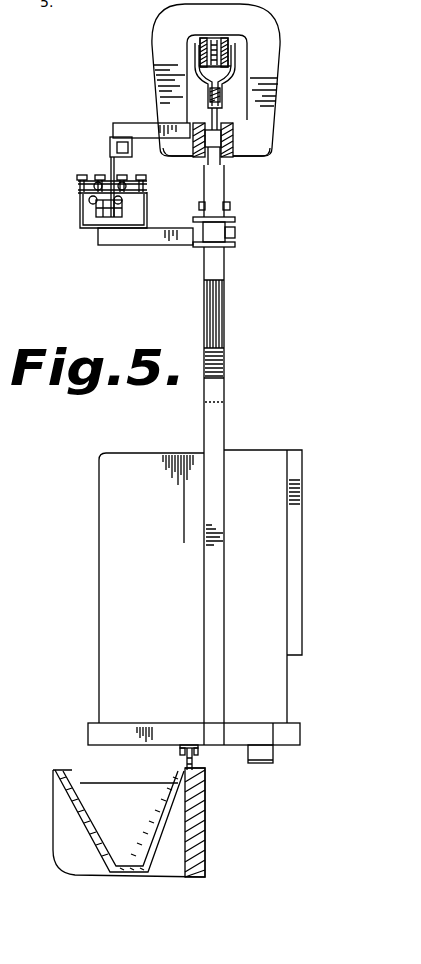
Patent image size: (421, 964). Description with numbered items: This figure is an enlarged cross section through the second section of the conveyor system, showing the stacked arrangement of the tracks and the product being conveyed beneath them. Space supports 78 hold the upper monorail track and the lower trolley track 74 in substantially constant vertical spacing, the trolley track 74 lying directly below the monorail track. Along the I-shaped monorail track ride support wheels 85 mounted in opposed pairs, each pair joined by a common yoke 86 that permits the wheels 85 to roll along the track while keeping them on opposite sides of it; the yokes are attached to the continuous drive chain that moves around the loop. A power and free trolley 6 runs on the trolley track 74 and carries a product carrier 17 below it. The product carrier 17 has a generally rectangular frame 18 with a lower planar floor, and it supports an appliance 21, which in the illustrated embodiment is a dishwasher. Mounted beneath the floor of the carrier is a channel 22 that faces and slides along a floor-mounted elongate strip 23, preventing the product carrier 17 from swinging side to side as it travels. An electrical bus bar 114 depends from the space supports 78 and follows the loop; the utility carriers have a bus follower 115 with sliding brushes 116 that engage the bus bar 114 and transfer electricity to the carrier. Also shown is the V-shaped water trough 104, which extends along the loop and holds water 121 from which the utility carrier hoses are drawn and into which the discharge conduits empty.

The space supports 78 is at (275, 22).
The support wheels 85 is at (225, 38).
The yoke 86 is at (238, 72).
The power and free trolley 6 is at (222, 137).
The lower trolley track 74 is at (241, 154).
The electrical bus bar 114 is at (110, 165).
The sliding brushes 116 is at (133, 175).
The bus follower 115 is at (82, 224).
The product carrier 17 is at (221, 416).
The appliance 21 is at (298, 451).
The frame 18 is at (294, 733).
The channel 22 is at (200, 754).
The elongate strip 23 is at (182, 762).
The water trough 104 is at (84, 760).
The water 121 is at (106, 786).